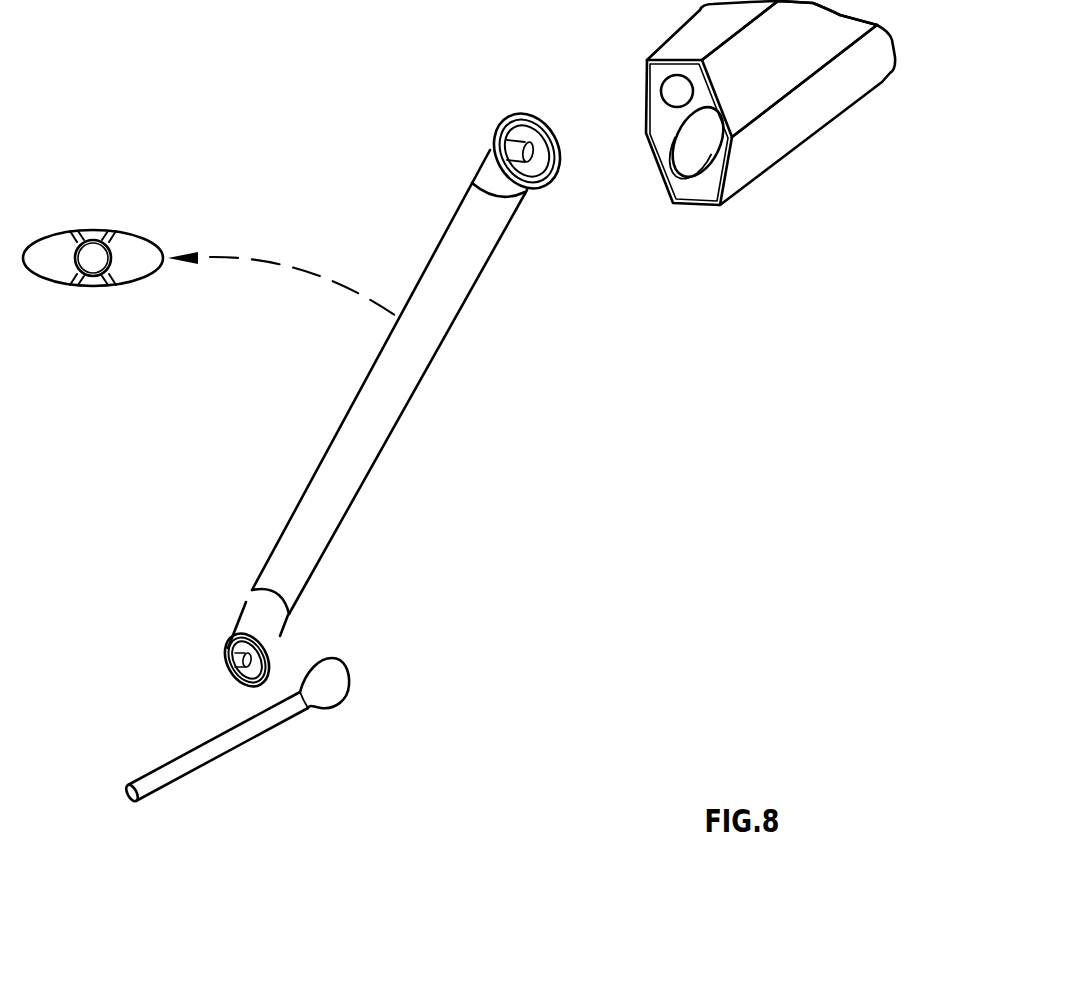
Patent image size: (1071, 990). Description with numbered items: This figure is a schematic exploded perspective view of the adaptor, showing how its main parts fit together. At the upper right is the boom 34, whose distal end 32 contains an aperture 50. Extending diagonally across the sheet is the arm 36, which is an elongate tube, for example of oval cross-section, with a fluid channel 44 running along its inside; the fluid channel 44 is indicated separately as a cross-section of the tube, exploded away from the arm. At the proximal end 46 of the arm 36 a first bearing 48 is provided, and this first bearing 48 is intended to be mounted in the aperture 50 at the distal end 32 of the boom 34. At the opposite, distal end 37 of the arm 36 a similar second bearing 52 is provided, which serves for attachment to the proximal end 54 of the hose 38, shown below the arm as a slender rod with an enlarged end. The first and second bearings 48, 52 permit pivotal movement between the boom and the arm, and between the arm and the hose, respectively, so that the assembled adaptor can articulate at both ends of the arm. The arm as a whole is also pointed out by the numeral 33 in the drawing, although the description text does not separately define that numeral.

The distal end of the boom 32 is at (731, 115).
The tie rod assembly 33 is at (381, 385).
The boom 34 is at (769, 56).
The arm 36 is at (395, 385).
The distal end of the arm 37 is at (238, 598).
The hose 38 is at (267, 684).
The fluid channel 44 is at (93, 258).
The proximal end of the arm 46 is at (550, 193).
The first bearing 48 is at (550, 127).
The aperture 50 is at (676, 163).
The second bearing 52 is at (236, 686).
The proximal end of the hose 54 is at (333, 668).